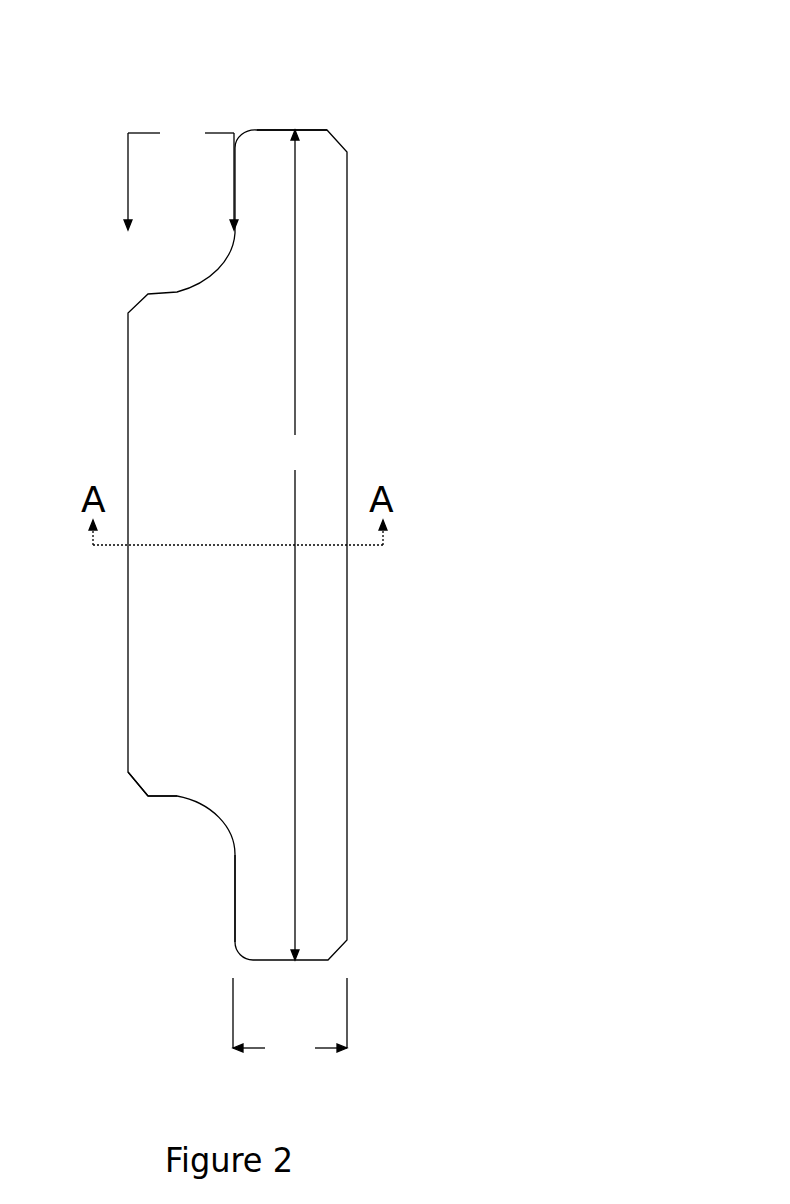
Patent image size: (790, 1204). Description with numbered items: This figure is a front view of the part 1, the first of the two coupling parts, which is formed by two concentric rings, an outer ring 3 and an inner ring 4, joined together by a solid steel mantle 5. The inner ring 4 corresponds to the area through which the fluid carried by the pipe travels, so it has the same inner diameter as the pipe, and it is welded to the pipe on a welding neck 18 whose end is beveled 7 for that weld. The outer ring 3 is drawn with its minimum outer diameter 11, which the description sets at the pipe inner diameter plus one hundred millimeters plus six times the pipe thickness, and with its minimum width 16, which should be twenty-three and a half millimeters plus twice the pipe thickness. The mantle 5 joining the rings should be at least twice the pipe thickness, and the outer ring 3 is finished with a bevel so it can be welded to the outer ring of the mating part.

The part 1 is at (476, 272).
The outer ring 3 is at (294, 114).
The inner ring 4 is at (170, 805).
The solid steel mantle 5 is at (221, 914).
The bevel 7 is at (128, 792).
The minimum outer diameter 11 is at (292, 545).
The minimum width 16 is at (290, 1023).
The welding neck 18 is at (181, 174).